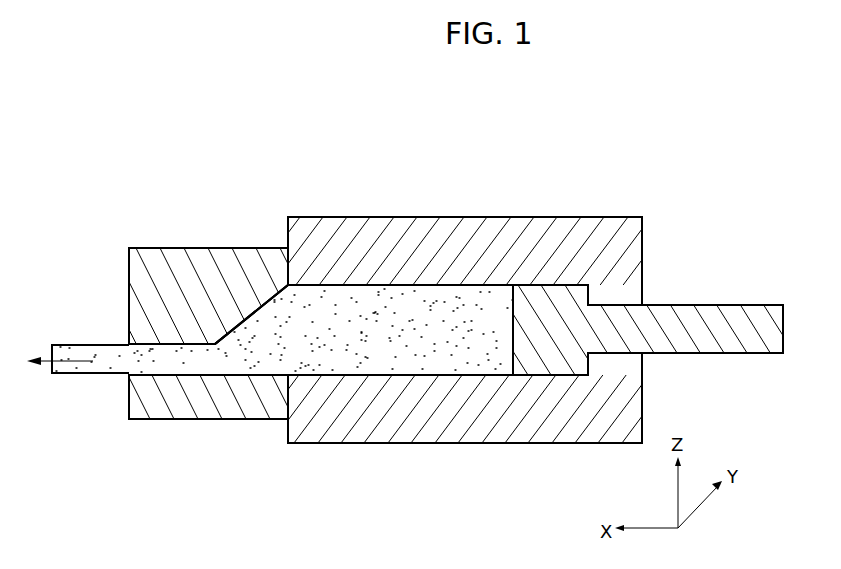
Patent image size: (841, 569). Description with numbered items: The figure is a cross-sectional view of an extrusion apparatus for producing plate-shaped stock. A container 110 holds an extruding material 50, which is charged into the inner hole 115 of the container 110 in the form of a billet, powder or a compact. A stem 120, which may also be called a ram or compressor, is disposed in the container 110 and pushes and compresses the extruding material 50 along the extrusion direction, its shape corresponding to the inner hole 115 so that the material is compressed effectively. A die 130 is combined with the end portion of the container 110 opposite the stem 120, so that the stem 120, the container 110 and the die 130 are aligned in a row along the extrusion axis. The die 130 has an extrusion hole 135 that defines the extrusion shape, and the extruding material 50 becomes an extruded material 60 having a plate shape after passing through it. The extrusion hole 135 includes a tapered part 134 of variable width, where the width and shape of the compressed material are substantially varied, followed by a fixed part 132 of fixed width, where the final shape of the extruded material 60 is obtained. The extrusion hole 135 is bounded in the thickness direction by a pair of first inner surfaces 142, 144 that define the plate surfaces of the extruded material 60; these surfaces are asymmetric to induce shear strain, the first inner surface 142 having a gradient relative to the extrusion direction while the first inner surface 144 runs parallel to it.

The extruding material 50 is at (395, 310).
The extruded material 60 is at (82, 368).
The container 110 is at (607, 221).
The inner hole 115 is at (404, 374).
The stem 120 is at (680, 313).
The die 130 is at (247, 252).
The fixed part 132 is at (163, 340).
The tapered part 134 is at (252, 312).
The extrusion hole 135 is at (193, 191).
The first inner surface 142 is at (231, 339).
The first inner surface 144 is at (262, 371).